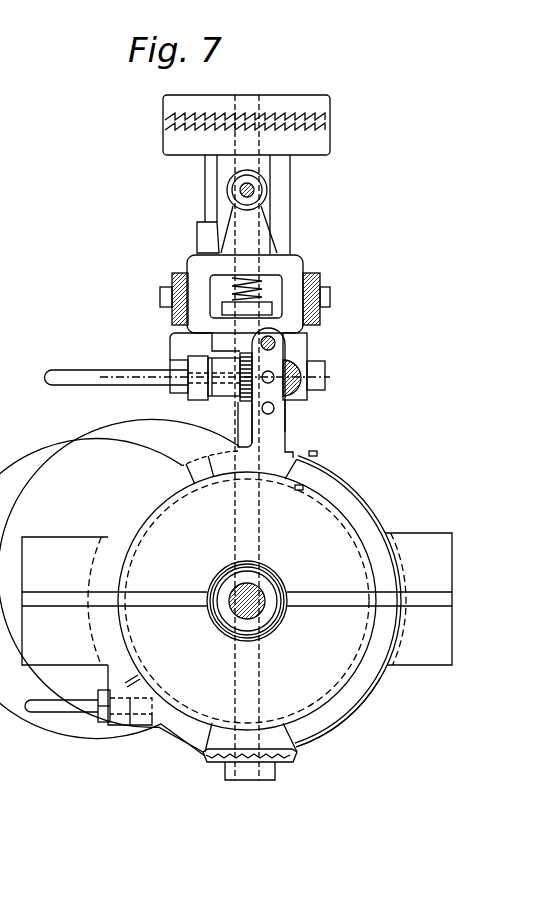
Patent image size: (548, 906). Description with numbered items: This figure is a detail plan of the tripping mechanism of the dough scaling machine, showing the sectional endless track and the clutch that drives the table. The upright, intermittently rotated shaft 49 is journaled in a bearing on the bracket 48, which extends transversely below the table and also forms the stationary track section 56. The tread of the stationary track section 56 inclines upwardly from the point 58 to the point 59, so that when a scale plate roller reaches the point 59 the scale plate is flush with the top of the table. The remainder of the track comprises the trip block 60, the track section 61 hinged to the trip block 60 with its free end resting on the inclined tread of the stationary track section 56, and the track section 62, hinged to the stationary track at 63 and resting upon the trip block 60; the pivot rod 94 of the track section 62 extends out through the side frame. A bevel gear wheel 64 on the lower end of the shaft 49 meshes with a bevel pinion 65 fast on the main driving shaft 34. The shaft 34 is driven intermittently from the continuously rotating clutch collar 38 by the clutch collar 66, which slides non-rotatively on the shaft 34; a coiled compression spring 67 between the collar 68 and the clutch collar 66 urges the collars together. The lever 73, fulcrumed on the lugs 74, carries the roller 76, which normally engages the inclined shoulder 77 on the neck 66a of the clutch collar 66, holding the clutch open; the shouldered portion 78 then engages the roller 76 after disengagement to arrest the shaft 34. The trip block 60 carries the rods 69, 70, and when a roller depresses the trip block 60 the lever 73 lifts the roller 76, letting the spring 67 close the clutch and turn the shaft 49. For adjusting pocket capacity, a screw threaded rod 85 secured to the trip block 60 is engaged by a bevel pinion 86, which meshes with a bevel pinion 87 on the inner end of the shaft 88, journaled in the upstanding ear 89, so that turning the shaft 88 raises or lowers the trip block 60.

The clutch collar 38 is at (332, 106).
The clutch collar 66 is at (332, 141).
The neck 66a is at (207, 170).
The shouldered portion 78 is at (272, 165).
The roller 76 is at (228, 190).
The inclined shoulder 77 is at (207, 213).
The coiled compression spring 67 is at (265, 296).
The lugs 74 is at (172, 282).
The lever 73 is at (170, 337).
The shaft 88 is at (102, 376).
The collar 68 is at (275, 318).
The rod 70 is at (292, 364).
The screw threaded rod 85 is at (325, 377).
The bevel pinion 86 is at (275, 407).
The upstanding ear 89 is at (198, 400).
The bevel pinion 87 is at (240, 402).
The rod 69 is at (276, 415).
The trip block 60 is at (280, 462).
The main driving shaft 34 is at (240, 443).
The track section 62 is at (133, 492).
The track section 61 is at (342, 488).
The stationary track section 56 is at (383, 557).
The point 58 is at (372, 548).
The bracket 48 is at (452, 632).
The intermittently rotated shaft 49 is at (258, 610).
The hinge 63 is at (138, 688).
The bevel gear wheel 64 is at (381, 693).
The pivot rod 94 is at (88, 712).
The bevel pinion 65 is at (204, 755).
The point 59 is at (275, 740).